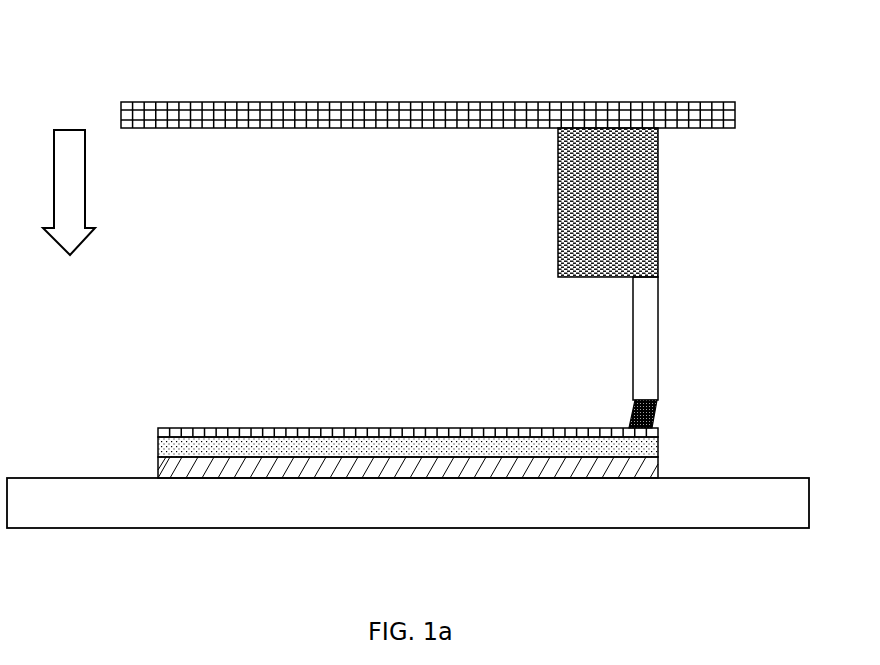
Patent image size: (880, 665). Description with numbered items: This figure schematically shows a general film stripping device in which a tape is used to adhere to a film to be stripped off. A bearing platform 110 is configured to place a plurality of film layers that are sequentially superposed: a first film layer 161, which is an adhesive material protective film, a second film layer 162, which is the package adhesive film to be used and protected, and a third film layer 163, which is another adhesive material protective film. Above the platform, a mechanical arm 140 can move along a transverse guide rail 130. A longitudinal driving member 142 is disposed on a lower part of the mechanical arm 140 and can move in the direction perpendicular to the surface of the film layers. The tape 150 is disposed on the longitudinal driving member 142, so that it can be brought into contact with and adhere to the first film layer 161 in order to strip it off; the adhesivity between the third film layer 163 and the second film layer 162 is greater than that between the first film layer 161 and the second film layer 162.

The bearing platform 110 is at (107, 507).
The transverse guide rail 130 is at (503, 103).
The mechanical arm 140 is at (558, 228).
The longitudinal driving member 142 is at (647, 362).
The tape 150 is at (632, 407).
The first film layer 161 is at (517, 435).
The second film layer 162 is at (375, 447).
The third film layer 163 is at (238, 474).